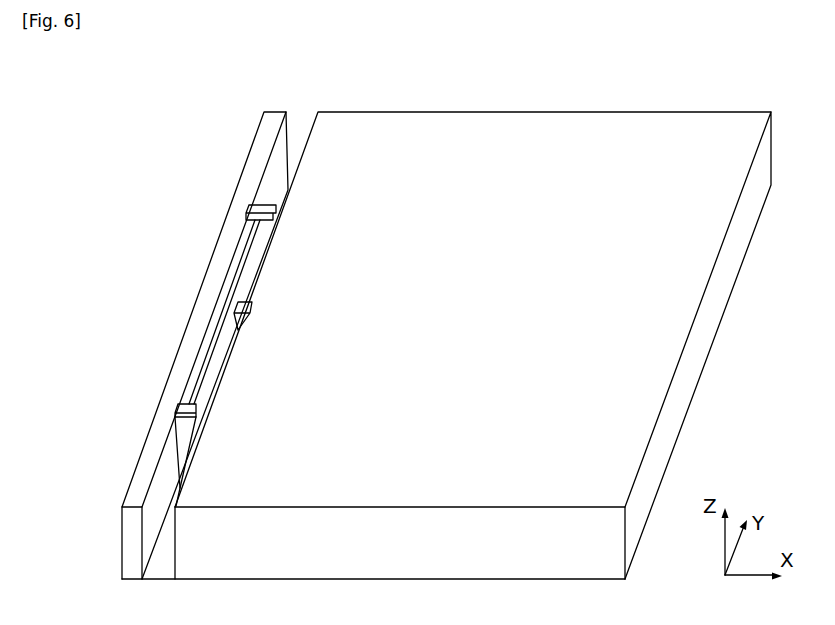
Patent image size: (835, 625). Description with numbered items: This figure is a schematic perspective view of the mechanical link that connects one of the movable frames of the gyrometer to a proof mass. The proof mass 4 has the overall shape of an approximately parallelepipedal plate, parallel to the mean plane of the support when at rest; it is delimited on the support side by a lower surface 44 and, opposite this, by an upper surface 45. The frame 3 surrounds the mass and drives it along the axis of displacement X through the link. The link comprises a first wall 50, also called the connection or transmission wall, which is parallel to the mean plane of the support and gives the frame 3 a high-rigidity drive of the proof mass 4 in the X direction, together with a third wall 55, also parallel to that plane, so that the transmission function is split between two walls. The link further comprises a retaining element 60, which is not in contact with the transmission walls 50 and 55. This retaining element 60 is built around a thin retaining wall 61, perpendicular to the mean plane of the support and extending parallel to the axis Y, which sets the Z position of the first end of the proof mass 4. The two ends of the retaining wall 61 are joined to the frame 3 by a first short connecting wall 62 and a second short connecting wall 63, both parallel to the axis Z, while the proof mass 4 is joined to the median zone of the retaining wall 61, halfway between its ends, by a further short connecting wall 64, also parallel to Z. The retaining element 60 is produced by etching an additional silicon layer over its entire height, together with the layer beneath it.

The frame 3 is at (196, 340).
The proof mass 4 is at (417, 341).
The lower surface 44 is at (594, 580).
The upper surface 45 is at (627, 153).
The first wall 50 is at (163, 565).
The third wall 55 is at (288, 188).
The retaining element 60 is at (207, 325).
The retaining wall 61 is at (233, 290).
The first connecting wall 62 is at (250, 208).
The second connecting wall 63 is at (177, 407).
The connecting wall 64 is at (236, 311).